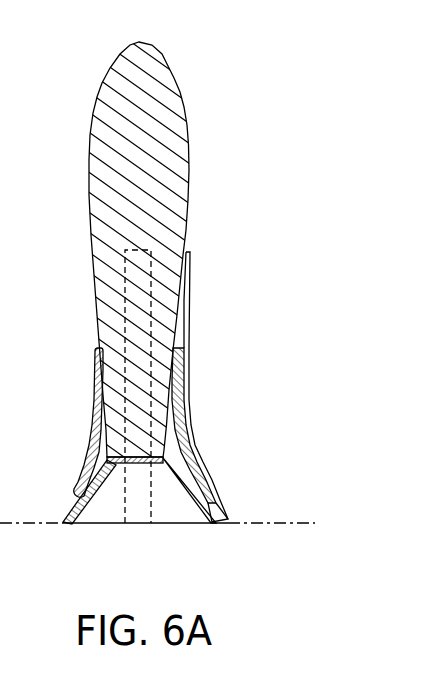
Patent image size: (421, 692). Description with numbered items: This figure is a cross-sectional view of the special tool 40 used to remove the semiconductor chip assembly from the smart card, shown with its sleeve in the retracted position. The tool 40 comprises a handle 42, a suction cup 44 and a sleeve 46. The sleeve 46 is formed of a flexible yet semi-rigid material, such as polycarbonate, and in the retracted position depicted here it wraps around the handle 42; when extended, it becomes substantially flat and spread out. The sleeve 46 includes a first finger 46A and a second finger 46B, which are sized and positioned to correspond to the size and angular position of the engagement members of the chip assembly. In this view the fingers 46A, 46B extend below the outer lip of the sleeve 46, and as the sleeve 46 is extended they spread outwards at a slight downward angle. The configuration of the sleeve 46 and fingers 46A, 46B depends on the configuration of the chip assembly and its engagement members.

The special tool 40 is at (194, 296).
The handle 42 is at (100, 108).
The suction cup 44 is at (168, 483).
The sleeve 46 is at (177, 393).
The first finger 46A is at (221, 513).
The second finger 46B is at (135, 517).